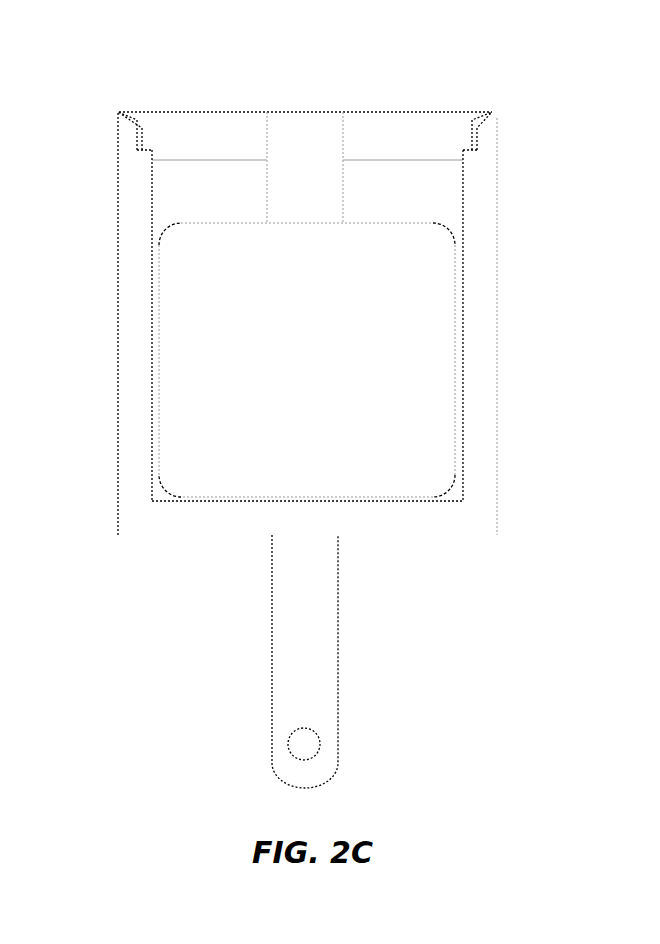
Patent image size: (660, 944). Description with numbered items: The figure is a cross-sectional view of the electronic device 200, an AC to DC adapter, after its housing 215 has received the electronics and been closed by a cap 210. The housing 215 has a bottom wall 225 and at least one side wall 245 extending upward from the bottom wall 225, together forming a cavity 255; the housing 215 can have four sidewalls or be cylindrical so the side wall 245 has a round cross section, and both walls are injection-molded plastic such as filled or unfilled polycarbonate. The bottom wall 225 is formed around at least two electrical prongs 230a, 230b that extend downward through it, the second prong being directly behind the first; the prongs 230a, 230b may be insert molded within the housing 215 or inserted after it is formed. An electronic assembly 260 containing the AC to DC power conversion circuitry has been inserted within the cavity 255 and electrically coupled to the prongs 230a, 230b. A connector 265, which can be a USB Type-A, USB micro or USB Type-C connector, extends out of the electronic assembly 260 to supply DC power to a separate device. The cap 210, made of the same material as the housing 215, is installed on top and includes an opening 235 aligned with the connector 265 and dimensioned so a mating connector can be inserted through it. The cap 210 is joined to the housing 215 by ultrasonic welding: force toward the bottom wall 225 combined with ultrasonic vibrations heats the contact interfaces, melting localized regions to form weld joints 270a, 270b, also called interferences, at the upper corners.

The electronic device 200 is at (525, 86).
The cap 210 is at (235, 130).
The housing 215 is at (133, 342).
The bottom wall 225 is at (415, 528).
The electrical prong 230a is at (328, 678).
The electrical prong 230b is at (304, 744).
The opening 235 is at (313, 127).
The side wall 245 is at (127, 262).
The cavity 255 is at (445, 200).
The electronic assembly 260 is at (455, 334).
The connector 265 is at (287, 207).
The weld joint 270a is at (492, 112).
The weld joint 270b is at (463, 161).